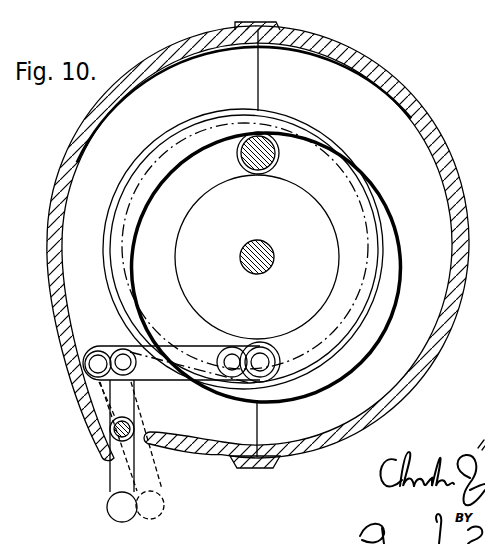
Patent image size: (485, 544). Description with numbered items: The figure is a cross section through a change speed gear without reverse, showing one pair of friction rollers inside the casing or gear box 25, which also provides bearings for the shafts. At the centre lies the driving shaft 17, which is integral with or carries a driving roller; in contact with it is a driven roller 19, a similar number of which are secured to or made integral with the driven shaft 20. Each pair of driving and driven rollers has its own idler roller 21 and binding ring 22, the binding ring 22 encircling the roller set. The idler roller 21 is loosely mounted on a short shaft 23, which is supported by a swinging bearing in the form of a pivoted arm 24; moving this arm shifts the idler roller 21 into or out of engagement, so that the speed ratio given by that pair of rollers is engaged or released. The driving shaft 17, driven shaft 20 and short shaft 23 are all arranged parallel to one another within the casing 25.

The driving shaft 17 is at (266, 251).
The driven roller 19 is at (237, 155).
The driven shaft 20 is at (257, 257).
The idler roller 21 is at (273, 349).
The binding ring 22 is at (259, 110).
The short shaft 23 is at (258, 355).
The pivoted arm 24 is at (163, 372).
The casing 25 is at (385, 79).